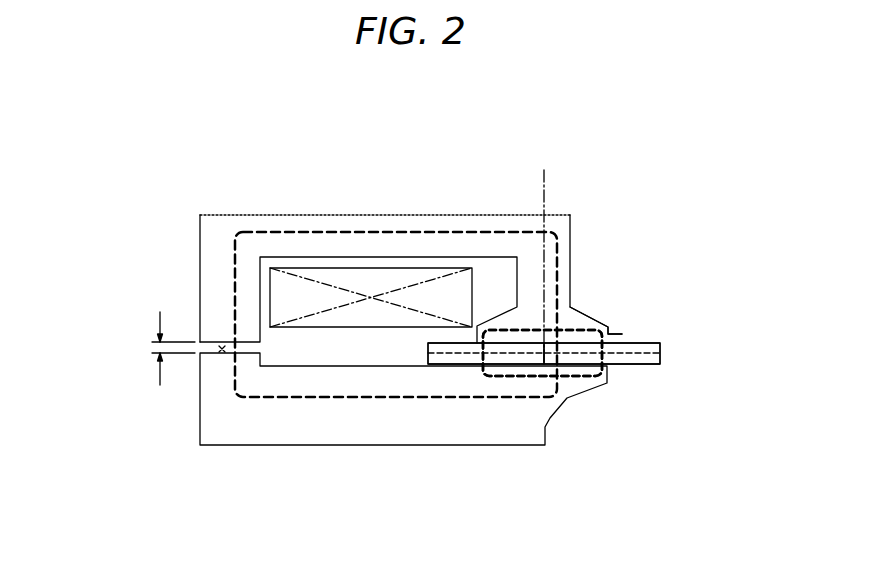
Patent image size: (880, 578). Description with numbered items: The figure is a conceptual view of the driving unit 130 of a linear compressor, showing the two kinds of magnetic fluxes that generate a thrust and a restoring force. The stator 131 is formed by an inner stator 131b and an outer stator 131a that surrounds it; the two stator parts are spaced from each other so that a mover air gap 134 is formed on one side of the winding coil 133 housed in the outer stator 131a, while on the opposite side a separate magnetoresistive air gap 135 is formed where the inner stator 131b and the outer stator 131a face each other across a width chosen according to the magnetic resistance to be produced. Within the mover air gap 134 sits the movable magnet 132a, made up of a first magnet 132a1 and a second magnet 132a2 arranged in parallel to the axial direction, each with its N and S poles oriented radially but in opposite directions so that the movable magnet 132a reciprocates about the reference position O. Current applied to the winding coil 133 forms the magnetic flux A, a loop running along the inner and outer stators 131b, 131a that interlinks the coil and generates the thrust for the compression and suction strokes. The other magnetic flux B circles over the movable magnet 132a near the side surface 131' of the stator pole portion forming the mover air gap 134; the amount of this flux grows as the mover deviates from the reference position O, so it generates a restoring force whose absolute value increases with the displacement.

The driving unit 130 is at (178, 168).
The stator 131 is at (399, 323).
The outer stator 131a is at (312, 228).
The inner stator 131b is at (301, 425).
The side surface of a pole portion of the stator 131' is at (631, 301).
The movable magnet 132a is at (618, 493).
The first magnet 132a1 is at (473, 358).
The second magnet 132a2 is at (630, 364).
The winding coil 133 is at (371, 280).
The mover air gap 134 is at (583, 347).
The magnetoresistive air gap 135 is at (222, 353).
The magnetic flux A is at (447, 231).
The magnetic flux B is at (592, 328).
The reference position O is at (546, 254).